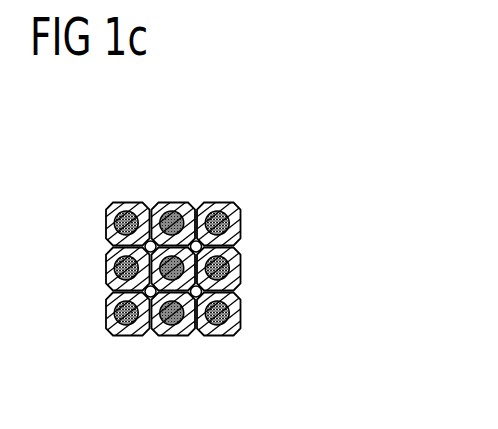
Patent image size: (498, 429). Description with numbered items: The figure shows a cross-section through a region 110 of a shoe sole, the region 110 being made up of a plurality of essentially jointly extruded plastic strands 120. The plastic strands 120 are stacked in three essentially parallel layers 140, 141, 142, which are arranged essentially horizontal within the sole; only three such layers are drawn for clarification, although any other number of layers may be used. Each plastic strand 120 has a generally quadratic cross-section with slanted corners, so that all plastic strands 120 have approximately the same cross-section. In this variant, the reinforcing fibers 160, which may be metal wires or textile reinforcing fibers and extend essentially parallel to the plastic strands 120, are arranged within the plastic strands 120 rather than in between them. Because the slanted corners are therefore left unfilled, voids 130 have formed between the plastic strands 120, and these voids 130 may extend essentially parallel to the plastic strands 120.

The region 110 is at (123, 177).
The plastic strands 120 is at (218, 199).
The voids 130 is at (107, 266).
The layer 140 is at (277, 225).
The layer 141 is at (277, 268).
The layer 142 is at (277, 313).
The reinforcing fibers 160 is at (243, 207).